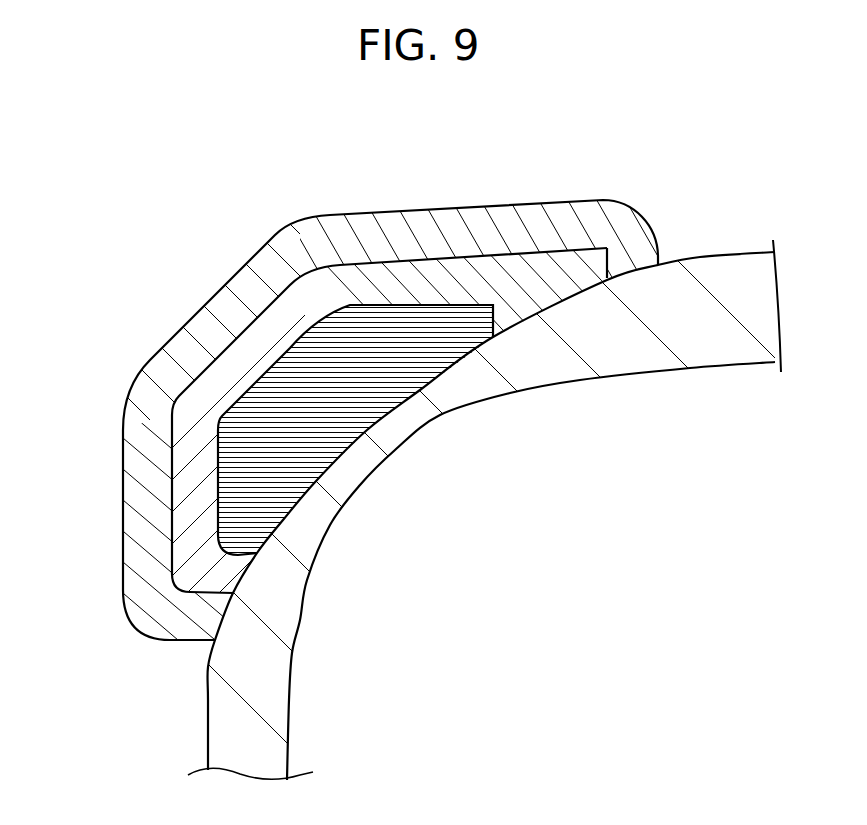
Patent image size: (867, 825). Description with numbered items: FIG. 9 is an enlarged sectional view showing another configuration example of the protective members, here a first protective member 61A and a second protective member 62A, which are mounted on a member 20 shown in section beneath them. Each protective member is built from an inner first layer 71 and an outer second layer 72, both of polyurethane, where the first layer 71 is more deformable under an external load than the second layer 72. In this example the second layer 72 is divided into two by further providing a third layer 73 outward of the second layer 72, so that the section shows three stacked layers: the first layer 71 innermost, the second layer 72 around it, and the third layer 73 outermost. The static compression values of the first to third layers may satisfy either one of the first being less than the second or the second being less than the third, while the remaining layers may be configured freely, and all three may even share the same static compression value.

The base member 20 is at (235, 752).
The first protective member 61A is at (181, 270).
The second protective member 62A is at (341, 436).
The first layer 71 is at (473, 330).
The second layer 72 is at (425, 277).
The third layer 73 is at (368, 233).